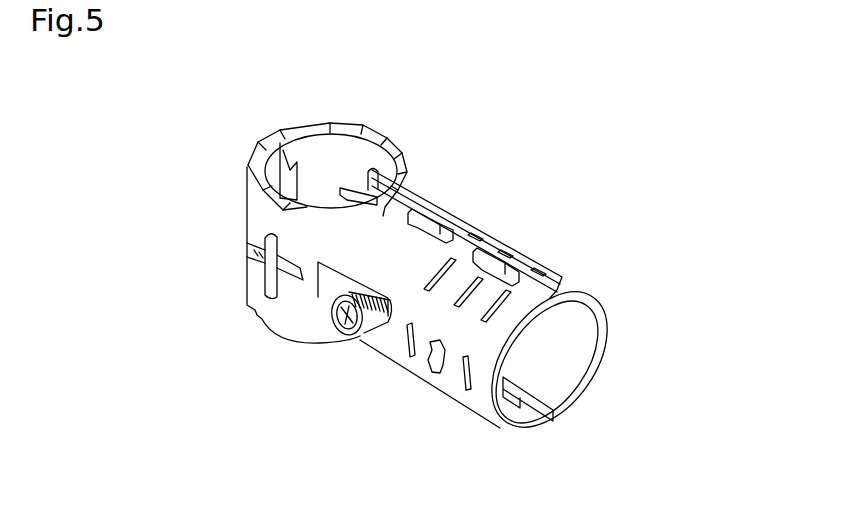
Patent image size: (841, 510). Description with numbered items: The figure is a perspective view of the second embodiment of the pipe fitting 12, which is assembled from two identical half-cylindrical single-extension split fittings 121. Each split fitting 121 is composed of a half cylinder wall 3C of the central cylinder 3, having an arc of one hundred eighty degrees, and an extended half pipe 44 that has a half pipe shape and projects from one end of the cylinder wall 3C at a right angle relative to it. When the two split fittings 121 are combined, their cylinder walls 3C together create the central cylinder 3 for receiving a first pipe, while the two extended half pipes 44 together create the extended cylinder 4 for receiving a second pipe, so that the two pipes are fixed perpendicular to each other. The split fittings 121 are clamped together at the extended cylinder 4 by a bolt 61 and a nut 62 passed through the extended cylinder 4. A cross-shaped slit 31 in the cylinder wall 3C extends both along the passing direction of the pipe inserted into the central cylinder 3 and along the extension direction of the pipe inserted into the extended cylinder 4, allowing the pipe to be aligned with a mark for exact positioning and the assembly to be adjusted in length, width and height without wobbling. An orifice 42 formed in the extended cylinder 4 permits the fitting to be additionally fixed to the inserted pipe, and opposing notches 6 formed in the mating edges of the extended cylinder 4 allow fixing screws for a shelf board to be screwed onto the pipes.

The pipe fitting 12 is at (206, 115).
The central cylinder 3 is at (293, 309).
The half cylinder wall 3C is at (342, 142).
The cross-shaped slit 31 is at (250, 272).
The notch 6 is at (432, 230).
The orifice 42 is at (430, 374).
The bolt 61 is at (332, 333).
The nut 62 is at (333, 348).
The extended cylinder 4 is at (604, 366).
The extended half pipe 44 is at (560, 283).
The half-cylindrical single-extension split fitting 121 is at (617, 330).